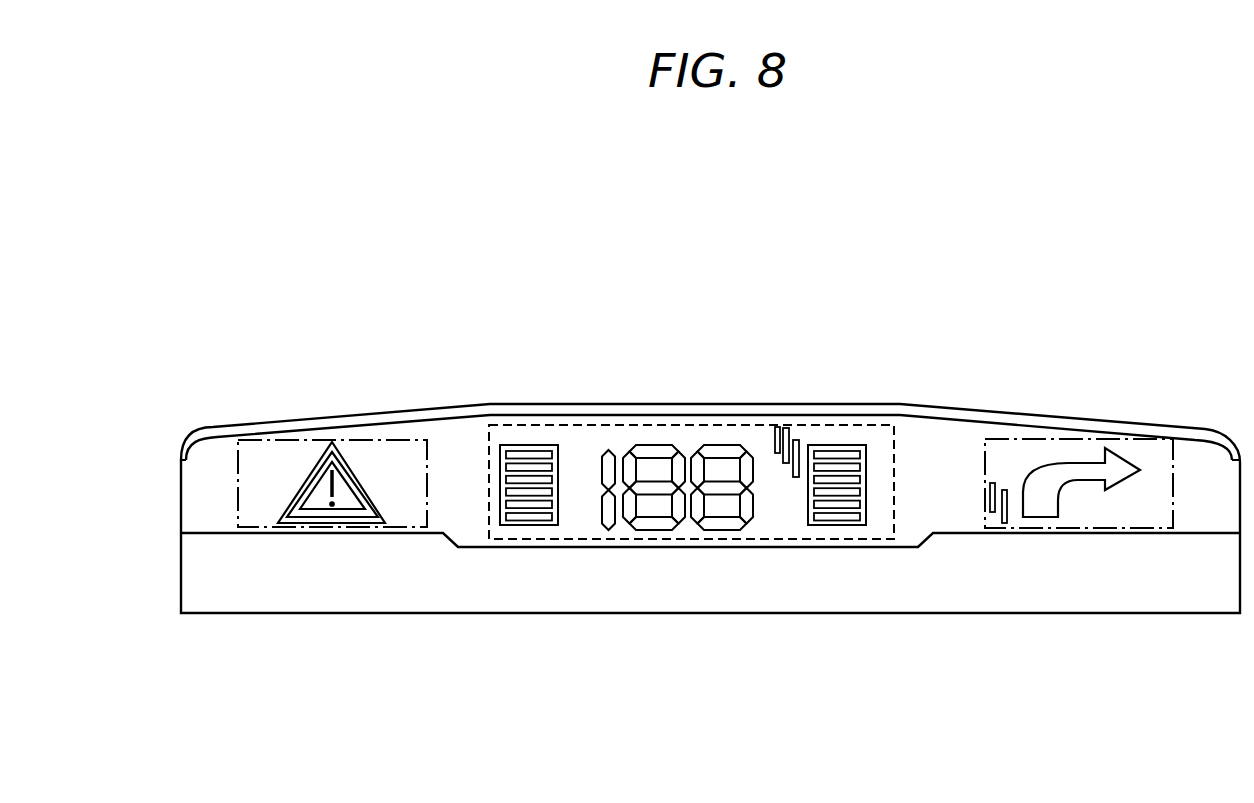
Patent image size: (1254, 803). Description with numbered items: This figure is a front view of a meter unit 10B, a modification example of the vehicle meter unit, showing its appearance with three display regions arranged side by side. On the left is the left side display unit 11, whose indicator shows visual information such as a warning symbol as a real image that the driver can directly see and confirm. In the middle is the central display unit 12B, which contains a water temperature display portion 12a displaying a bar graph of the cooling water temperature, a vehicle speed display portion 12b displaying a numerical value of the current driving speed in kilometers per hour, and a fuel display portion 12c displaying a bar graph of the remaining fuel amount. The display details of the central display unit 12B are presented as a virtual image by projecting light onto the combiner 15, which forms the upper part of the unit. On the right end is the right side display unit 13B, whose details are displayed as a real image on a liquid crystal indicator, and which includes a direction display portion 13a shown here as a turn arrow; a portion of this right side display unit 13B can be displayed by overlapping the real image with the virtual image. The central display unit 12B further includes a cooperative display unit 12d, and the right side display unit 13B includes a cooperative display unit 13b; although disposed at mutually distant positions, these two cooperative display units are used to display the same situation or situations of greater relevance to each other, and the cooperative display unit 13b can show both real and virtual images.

The meter unit 10B is at (605, 253).
The left side display unit 11 is at (278, 462).
The central display unit 12B is at (691, 438).
The water temperature display portion 12a is at (530, 525).
The vehicle speed display portion 12b is at (653, 525).
The fuel display portion 12c is at (835, 525).
The cooperative display unit 12d is at (784, 423).
The right side display unit 13B is at (1063, 448).
The cooperative display unit 13b is at (997, 482).
The direction display portion 13a is at (1085, 464).
The combiner 15 is at (925, 442).